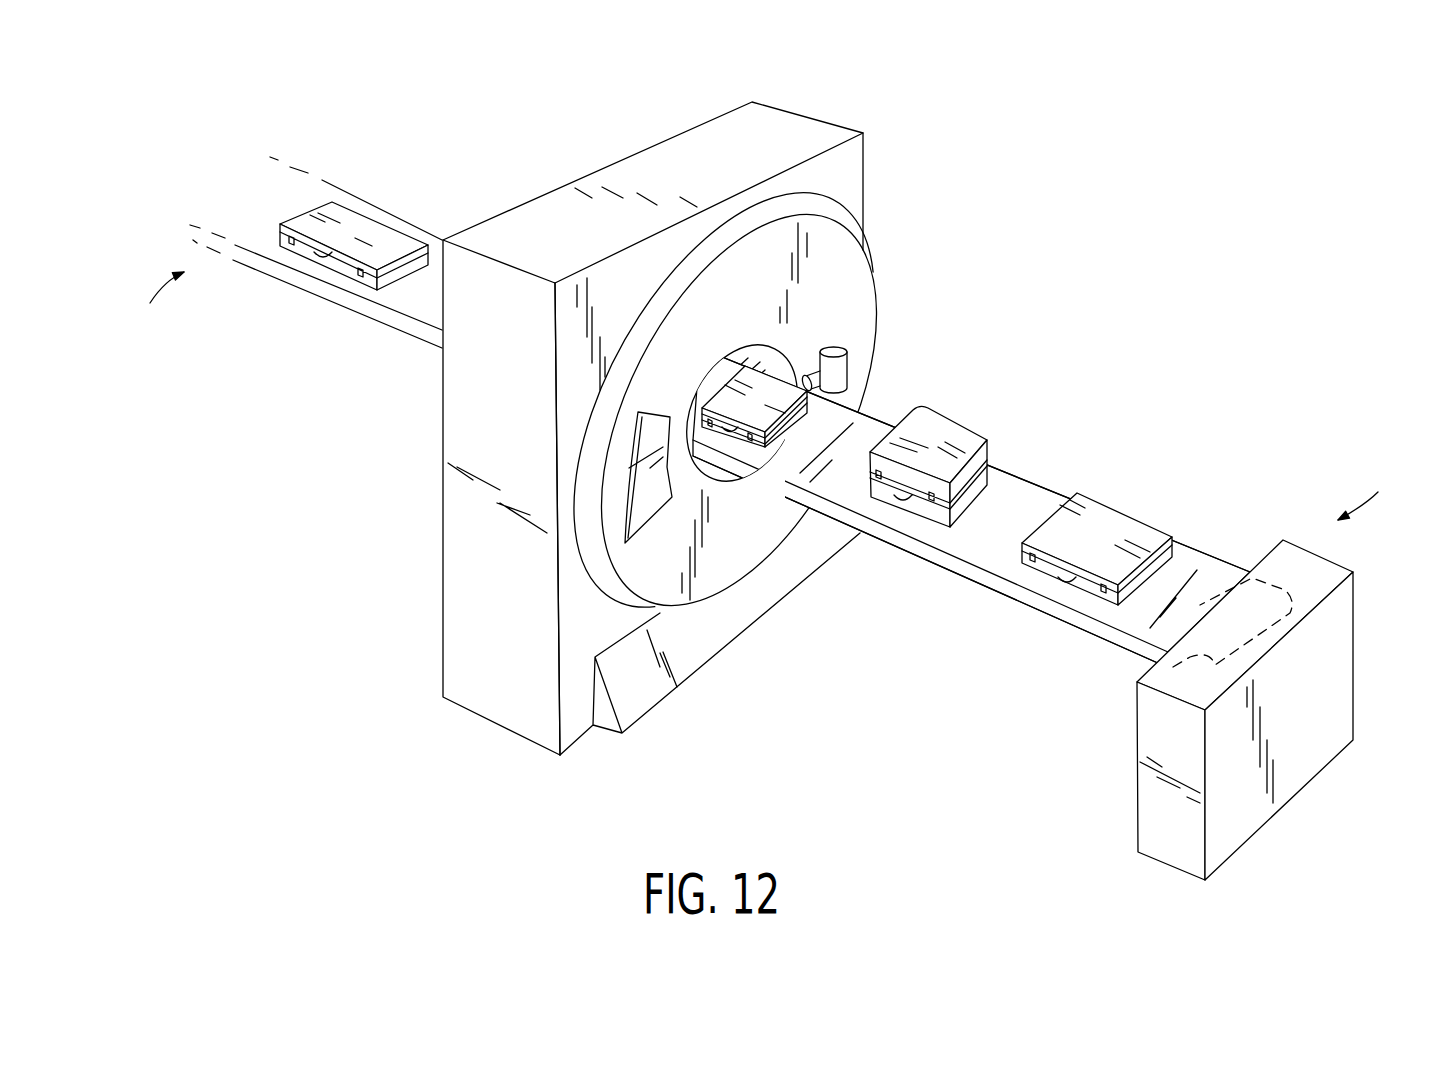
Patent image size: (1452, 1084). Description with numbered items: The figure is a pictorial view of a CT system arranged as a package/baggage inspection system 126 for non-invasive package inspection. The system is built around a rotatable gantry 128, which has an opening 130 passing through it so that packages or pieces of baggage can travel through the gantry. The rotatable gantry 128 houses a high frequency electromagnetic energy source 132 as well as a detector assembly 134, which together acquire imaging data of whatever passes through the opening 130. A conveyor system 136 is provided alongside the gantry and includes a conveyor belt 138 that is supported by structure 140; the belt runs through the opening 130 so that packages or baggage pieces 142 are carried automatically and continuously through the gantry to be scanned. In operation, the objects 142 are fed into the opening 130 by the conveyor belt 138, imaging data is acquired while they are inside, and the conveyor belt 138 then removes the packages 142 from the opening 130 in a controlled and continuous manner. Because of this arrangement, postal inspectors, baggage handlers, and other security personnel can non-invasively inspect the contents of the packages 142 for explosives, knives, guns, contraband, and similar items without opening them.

The package/baggage inspection system 126 is at (838, 428).
The rotatable gantry 128 is at (860, 279).
The opening 130 is at (767, 358).
The high frequency electromagnetic energy source 132 is at (847, 365).
The detector assembly 134 is at (650, 518).
The conveyor system 136 is at (752, 396).
The conveyor belt 138 is at (395, 303).
The structure 140 is at (1337, 672).
The packages or baggage pieces 142 is at (368, 228).